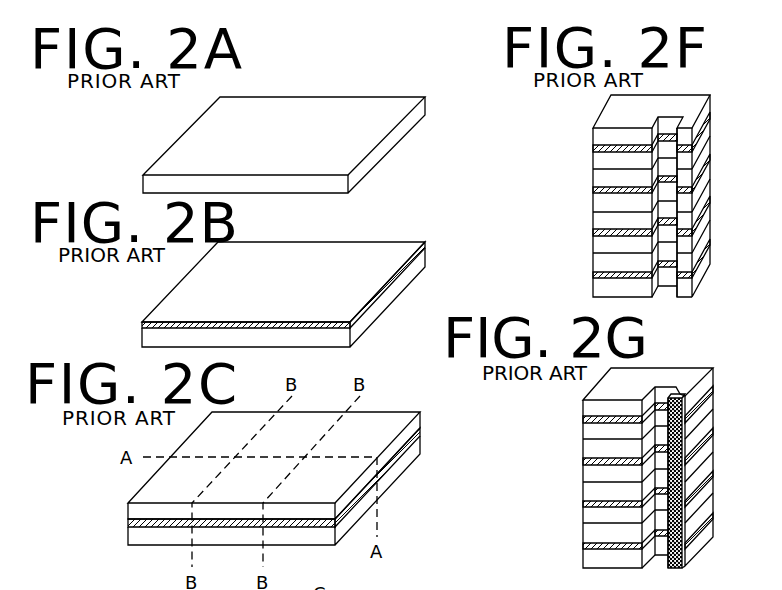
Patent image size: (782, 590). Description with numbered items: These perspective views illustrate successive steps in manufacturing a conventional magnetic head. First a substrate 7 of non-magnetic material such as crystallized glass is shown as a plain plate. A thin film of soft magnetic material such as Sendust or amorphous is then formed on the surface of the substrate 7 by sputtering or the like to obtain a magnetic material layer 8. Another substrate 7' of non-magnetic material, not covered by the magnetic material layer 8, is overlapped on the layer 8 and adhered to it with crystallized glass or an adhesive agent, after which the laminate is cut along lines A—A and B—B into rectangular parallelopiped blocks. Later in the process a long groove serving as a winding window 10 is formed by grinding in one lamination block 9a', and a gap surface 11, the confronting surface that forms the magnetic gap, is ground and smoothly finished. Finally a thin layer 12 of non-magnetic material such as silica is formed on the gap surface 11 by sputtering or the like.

In FIG. 2A, the substrate 7 is at (284, 145).
In FIG. 2B, the substrate 7 is at (283, 297).
In FIG. 2C, the substrate 7 is at (274, 504).
In FIG. 2F, the substrate 7 is at (619, 212).
In FIG. 2G, the substrate 7 is at (591, 484).
In FIG. 2C, the another substrate 7' is at (297, 463).
In FIG. 2B, the magnetic material layer 8 is at (417, 255).
In FIG. 2C, the magnetic material layer 8 is at (420, 436).
In FIG. 2F, the magnetic material layer 8 is at (598, 188).
In FIG. 2G, the magnetic material layer 8 is at (583, 464).
In FIG. 2F, the lamination block 9a' is at (651, 183).
In FIG. 2G, the lamination block 9a' is at (648, 449).
In FIG. 2F, the winding window 10 is at (670, 120).
In FIG. 2G, the winding window 10 is at (668, 390).
In FIG. 2F, the gap surface 11 is at (682, 178).
In FIG. 2G, the gap surface 11 is at (684, 441).
In FIG. 2G, the thin layer of non-magnetic material 12 is at (673, 513).